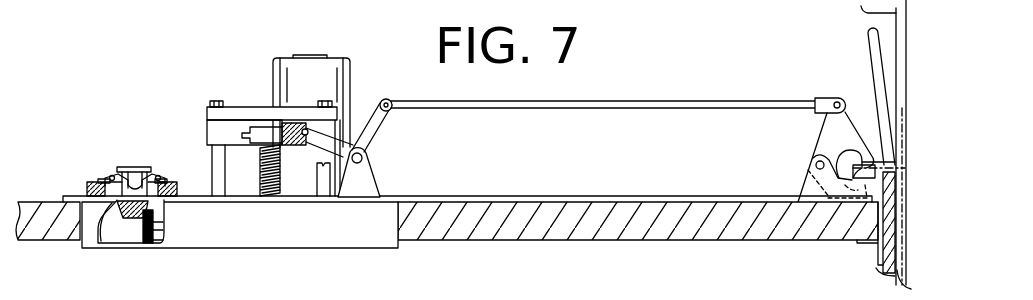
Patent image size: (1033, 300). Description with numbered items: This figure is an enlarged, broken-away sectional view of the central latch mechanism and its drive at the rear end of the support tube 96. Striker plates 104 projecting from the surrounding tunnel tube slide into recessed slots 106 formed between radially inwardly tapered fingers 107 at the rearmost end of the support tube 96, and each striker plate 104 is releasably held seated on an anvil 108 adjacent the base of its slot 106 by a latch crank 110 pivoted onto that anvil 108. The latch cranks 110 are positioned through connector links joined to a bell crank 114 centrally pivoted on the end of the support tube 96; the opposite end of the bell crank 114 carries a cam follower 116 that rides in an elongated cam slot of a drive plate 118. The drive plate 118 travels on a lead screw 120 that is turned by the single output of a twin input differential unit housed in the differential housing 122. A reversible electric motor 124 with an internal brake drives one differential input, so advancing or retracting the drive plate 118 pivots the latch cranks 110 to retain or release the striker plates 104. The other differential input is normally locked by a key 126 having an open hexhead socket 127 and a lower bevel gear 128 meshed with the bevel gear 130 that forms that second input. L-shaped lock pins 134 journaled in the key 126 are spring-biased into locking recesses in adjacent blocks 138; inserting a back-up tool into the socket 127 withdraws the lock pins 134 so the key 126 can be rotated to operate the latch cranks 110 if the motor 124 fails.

The support tube 96 is at (576, 206).
The striker plate 104 is at (850, 148).
The recessed slot 106 is at (893, 165).
The radially inwardly tapered finger 107 is at (872, 30).
The anvil 108 is at (857, 243).
The latch crank 110 is at (846, 112).
The bell crank 114 is at (383, 131).
The cam follower 116 is at (308, 132).
The drive plate 118 is at (210, 130).
The lead screw 120 is at (278, 168).
The differential housing 122 is at (375, 241).
The reversible electric motor 124 is at (335, 61).
The key 126 is at (105, 216).
The open hexhead socket 127 is at (132, 172).
The lower bevel gear 128 is at (150, 218).
The bevel gear 130 is at (146, 243).
The L-shaped lock pin 134 is at (152, 172).
The block 138 is at (180, 193).